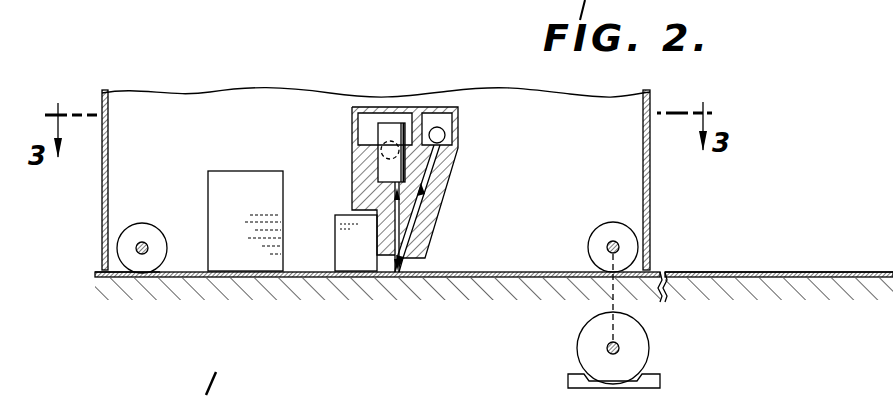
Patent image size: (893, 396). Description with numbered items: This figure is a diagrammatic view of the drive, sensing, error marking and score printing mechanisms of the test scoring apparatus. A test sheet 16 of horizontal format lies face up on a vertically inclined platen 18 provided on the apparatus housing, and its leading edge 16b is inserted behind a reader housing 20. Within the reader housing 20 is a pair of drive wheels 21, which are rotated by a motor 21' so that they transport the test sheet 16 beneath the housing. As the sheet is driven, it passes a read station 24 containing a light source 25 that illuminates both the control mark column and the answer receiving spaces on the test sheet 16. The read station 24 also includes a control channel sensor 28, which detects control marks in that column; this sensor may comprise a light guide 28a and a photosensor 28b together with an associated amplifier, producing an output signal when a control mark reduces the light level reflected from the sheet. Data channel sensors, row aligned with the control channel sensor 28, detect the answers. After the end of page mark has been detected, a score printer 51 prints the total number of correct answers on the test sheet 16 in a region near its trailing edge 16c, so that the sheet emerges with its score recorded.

The test sheet 16 is at (478, 264).
The test sheet leading edge 16b is at (95, 275).
The trailing edge 16c is at (835, 272).
The platen 18 is at (214, 292).
The reader housing 20 is at (102, 224).
The drive wheels 21 is at (377, 242).
The motor 21' is at (634, 321).
The read station 24 is at (406, 98).
The light source 25 is at (446, 135).
The control channel sensor 28 is at (370, 167).
The light guide 28a is at (393, 208).
The photosensor 28b is at (389, 144).
The score printer 51 is at (232, 178).